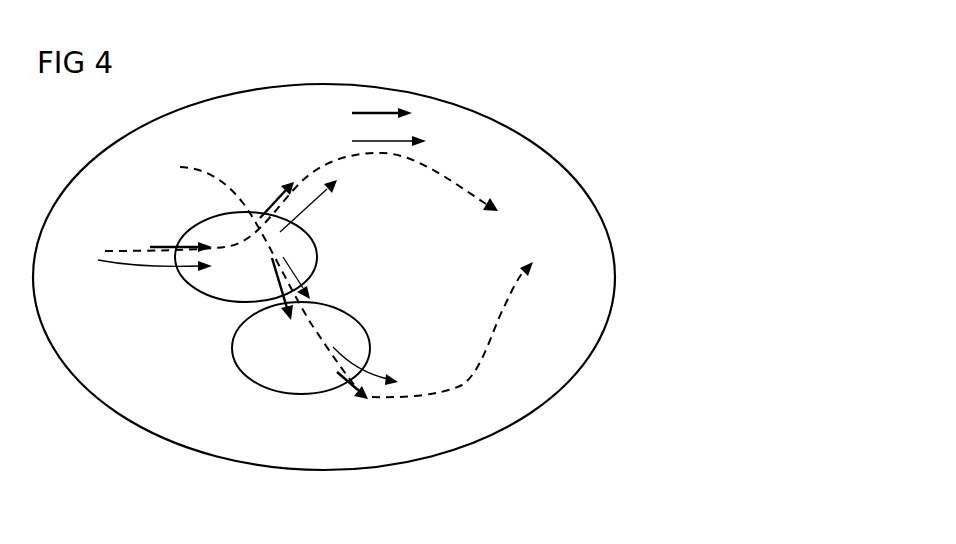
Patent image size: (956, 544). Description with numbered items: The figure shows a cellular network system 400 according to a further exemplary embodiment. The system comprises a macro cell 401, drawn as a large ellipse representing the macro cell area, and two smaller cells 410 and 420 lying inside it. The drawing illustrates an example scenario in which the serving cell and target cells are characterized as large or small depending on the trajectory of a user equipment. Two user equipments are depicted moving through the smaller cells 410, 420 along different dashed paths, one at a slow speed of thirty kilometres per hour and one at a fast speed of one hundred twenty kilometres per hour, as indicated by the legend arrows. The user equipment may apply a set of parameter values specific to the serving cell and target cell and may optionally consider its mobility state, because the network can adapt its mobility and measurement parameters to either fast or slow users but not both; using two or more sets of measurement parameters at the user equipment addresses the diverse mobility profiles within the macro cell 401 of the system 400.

The cellular network system 400 is at (541, 118).
The macro cell 401 is at (539, 406).
The smaller cell 410 is at (246, 257).
The smaller cell 420 is at (301, 348).